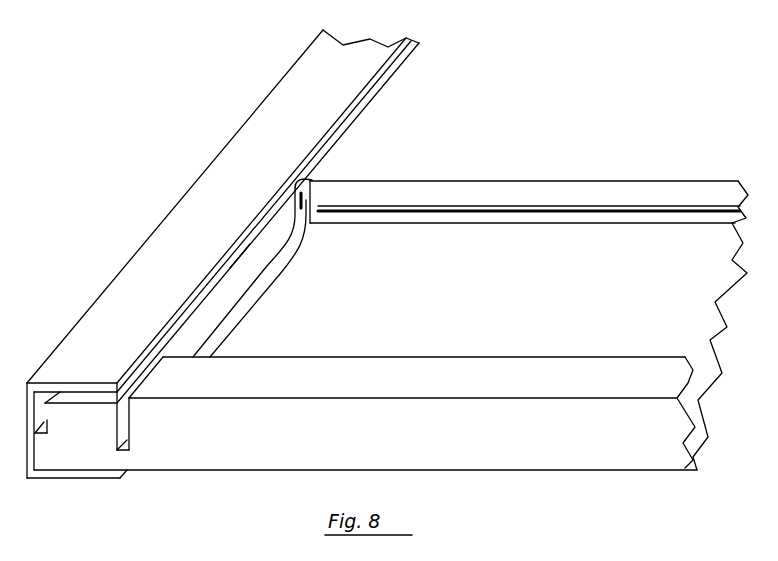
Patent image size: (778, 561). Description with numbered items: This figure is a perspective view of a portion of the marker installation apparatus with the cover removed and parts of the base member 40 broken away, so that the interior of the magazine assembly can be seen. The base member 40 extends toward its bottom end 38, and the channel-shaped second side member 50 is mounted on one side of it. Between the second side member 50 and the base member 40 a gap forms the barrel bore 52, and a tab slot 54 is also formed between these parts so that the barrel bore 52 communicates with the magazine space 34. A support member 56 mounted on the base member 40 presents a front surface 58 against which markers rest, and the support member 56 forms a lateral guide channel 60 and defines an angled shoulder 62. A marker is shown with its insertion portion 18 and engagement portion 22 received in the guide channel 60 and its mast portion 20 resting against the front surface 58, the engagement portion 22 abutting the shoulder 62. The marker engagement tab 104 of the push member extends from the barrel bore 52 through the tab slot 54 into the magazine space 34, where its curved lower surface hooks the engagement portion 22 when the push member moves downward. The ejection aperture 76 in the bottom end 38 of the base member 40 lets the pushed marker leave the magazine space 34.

The insertion portion 18 is at (240, 307).
The mast portion 20 is at (340, 135).
The engagement portion 22 is at (287, 215).
The magazine space 34 is at (360, 164).
The bottom end 38 is at (562, 442).
The base member 40 is at (483, 442).
The second side member 50 is at (100, 312).
The barrel bore 52 is at (62, 393).
The tab slot 54 is at (87, 398).
The support member 56 is at (392, 125).
The front surface 58 is at (413, 102).
The guide channel 60 is at (307, 339).
The shoulder 62 is at (437, 196).
The ejection aperture 76 is at (120, 418).
The marker engagement tab 104 is at (300, 183).